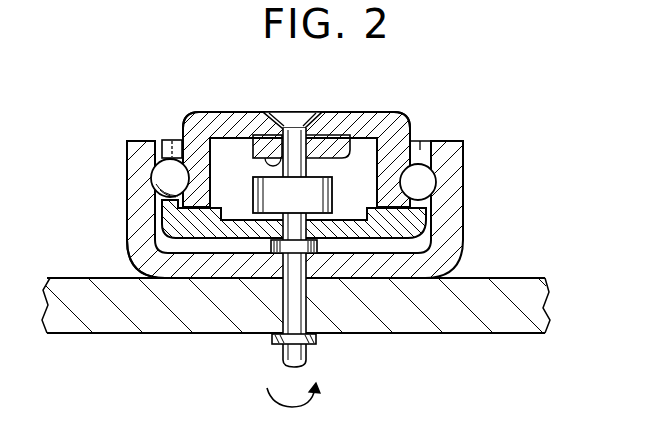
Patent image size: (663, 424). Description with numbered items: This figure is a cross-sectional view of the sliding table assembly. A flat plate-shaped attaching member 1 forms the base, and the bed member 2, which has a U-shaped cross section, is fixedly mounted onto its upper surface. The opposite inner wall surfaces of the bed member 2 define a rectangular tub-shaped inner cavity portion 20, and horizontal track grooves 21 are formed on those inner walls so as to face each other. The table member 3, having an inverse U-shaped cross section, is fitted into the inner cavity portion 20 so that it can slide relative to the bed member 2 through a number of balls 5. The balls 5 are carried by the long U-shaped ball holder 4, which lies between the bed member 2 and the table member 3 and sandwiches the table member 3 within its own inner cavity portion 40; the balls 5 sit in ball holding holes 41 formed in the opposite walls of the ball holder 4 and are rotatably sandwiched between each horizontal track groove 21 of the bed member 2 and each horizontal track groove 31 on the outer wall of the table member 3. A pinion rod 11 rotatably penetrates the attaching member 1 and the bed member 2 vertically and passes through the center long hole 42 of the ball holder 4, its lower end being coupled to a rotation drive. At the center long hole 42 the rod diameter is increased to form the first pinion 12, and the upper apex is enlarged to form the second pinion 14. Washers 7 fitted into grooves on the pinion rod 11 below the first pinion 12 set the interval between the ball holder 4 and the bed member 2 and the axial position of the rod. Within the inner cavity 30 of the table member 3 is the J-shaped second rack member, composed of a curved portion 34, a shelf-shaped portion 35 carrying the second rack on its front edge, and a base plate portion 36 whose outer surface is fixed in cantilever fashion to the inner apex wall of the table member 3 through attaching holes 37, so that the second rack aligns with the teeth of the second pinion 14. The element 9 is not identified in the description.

The attaching member 1 is at (506, 319).
The bed member 2 is at (453, 222).
The table member 3 is at (383, 126).
The ball holder 4 is at (425, 143).
The balls 5 is at (426, 196).
The washers 7 is at (273, 340).
The screw head 9 is at (300, 114).
The pinion rod 11 is at (308, 357).
The first pinion 12 is at (230, 279).
The second pinion 14 is at (305, 210).
The inner cavity portion 20 is at (447, 247).
The horizontal track grooves 21 is at (150, 174).
The inner cavity 30 is at (223, 157).
The horizontal track groove 31 is at (220, 209).
The curved portion 34 is at (436, 153).
The shelf-shaped portion 35 is at (446, 210).
The base plate portion 36 is at (371, 106).
The attaching holes 37 is at (260, 129).
The inner cavity portion 40 is at (177, 279).
The ball holding holes 41 is at (172, 139).
The center long hole 42 is at (322, 236).